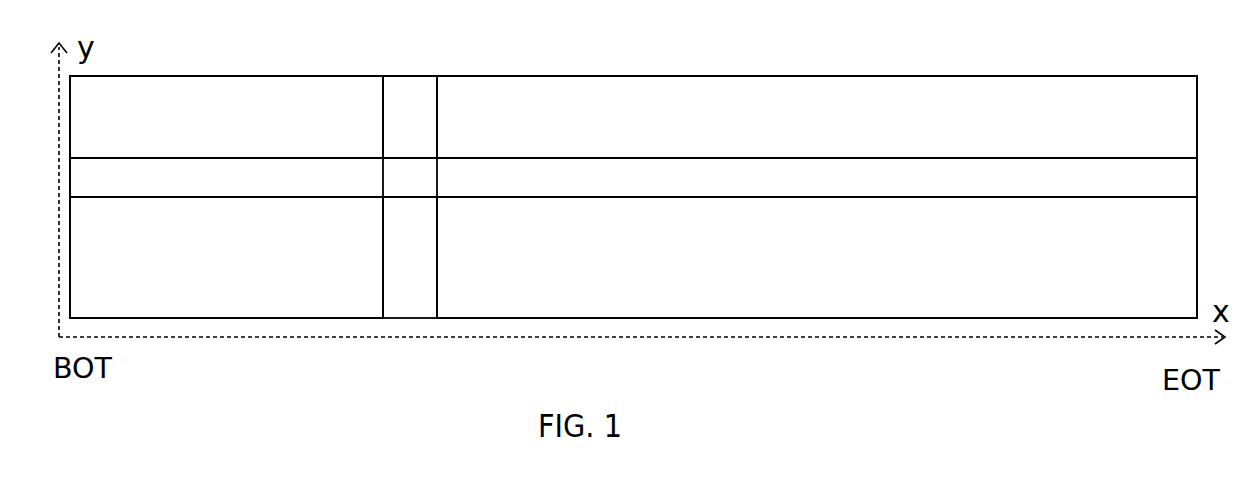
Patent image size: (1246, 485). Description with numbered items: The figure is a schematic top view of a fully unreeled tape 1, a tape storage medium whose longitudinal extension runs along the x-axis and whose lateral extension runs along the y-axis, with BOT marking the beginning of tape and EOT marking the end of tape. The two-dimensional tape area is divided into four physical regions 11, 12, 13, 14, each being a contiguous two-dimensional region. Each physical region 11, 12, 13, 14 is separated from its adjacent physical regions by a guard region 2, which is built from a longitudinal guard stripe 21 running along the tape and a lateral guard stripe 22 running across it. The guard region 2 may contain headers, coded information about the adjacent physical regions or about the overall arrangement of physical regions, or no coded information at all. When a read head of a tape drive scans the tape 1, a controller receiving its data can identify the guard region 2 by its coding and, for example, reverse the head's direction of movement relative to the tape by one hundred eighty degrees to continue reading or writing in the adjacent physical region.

The tape 1 is at (878, 320).
The guard region 2 is at (403, 294).
The physical region 11 is at (226, 117).
The physical region 12 is at (817, 117).
The physical region 13 is at (226, 257).
The physical region 14 is at (817, 257).
The longitudinal guard stripe 21 is at (633, 177).
The lateral guard stripe 22 is at (410, 117).